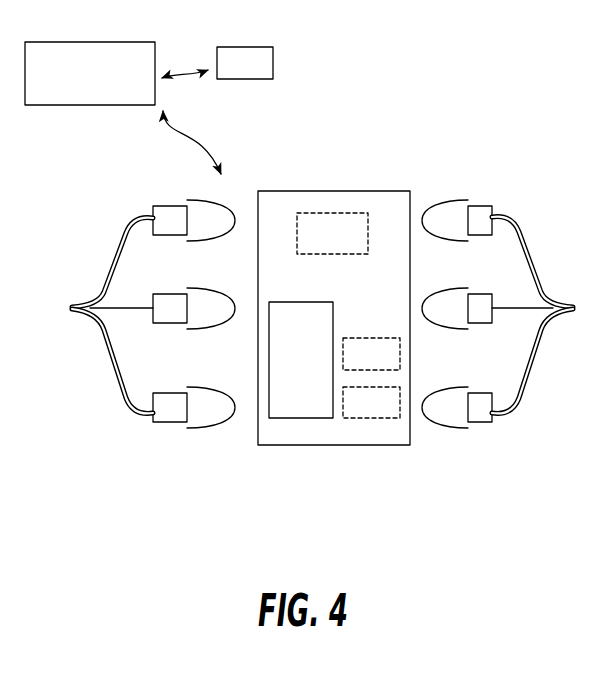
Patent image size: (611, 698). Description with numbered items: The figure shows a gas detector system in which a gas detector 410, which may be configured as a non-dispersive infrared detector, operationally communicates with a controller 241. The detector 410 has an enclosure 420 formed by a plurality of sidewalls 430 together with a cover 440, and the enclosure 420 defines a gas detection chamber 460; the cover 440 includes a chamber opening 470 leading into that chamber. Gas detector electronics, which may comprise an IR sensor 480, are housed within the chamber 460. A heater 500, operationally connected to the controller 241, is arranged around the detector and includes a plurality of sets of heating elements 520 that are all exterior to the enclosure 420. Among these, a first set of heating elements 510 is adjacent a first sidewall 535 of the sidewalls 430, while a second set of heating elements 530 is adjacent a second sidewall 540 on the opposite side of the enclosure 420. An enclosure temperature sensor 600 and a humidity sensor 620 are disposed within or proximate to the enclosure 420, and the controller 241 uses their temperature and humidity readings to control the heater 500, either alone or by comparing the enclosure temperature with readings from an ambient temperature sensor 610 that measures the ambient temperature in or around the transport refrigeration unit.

The controller 241 is at (107, 86).
The ambient temperature sensor 610 is at (273, 62).
The gas detector 410 is at (338, 172).
The cover 440 is at (383, 299).
The IR sensor 480 is at (350, 220).
The chamber opening 470 is at (305, 405).
The enclosure temperature sensor 600 is at (378, 353).
The humidity sensor 620 is at (385, 402).
The gas detection chamber 460 is at (327, 432).
The enclosure 420 is at (362, 449).
The sidewalls 430 is at (250, 441).
The first sidewall 535 is at (258, 340).
The second sidewall 540 is at (410, 432).
The first set of heating elements 510 is at (190, 430).
The plurality of sets of heating elements 520 is at (97, 240).
The heater 500 is at (92, 351).
The second set of heating elements 530 is at (528, 401).